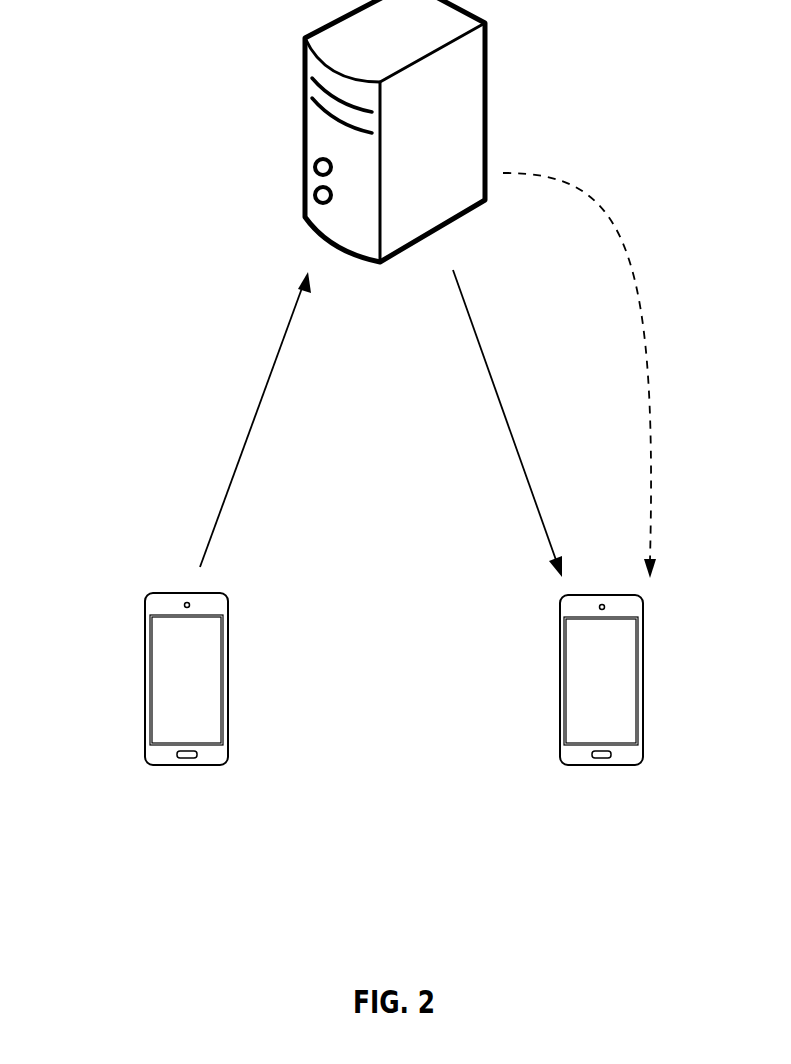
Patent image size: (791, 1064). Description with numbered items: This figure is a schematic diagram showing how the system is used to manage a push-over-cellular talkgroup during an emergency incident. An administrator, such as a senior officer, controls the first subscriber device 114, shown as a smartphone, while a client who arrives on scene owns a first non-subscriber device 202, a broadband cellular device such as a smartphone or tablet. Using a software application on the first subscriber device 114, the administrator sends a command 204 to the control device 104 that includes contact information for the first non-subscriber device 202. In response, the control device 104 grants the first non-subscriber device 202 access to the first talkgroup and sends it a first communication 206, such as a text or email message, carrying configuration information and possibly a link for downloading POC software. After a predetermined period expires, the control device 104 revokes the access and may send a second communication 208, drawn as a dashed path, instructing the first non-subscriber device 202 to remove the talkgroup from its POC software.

The control device 104 is at (303, 95).
The first subscriber device 114 is at (145, 645).
The first non-subscriber device 202 is at (560, 633).
The command 204 is at (260, 410).
The first communication 206 is at (507, 418).
The second communication 208 is at (618, 245).